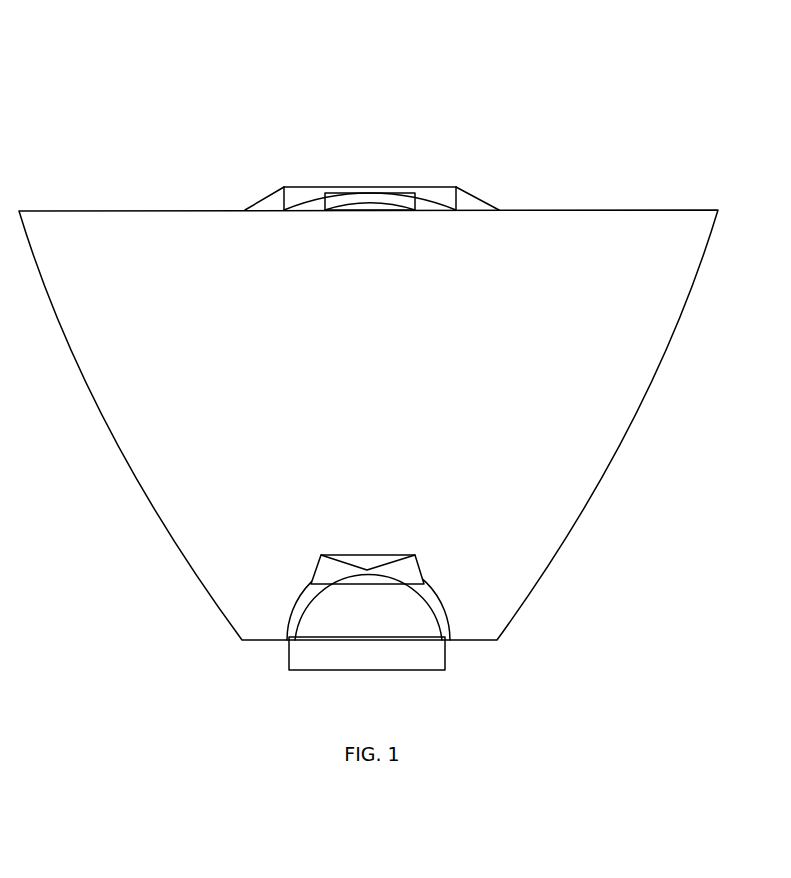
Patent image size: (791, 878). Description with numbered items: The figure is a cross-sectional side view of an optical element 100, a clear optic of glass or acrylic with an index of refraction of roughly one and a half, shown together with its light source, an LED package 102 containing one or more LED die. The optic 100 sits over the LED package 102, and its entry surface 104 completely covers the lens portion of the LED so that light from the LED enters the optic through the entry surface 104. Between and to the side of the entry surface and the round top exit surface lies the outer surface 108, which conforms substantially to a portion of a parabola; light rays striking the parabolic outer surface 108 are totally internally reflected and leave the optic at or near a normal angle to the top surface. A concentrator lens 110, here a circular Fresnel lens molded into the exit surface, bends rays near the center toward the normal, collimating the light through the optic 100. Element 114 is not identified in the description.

The optical element 100 is at (127, 133).
The LED package 102 is at (445, 661).
The entry surface 104 is at (363, 519).
The outer surface 108 is at (140, 495).
The concentrator lens 110 is at (495, 227).
The lens portion 114 is at (482, 200).